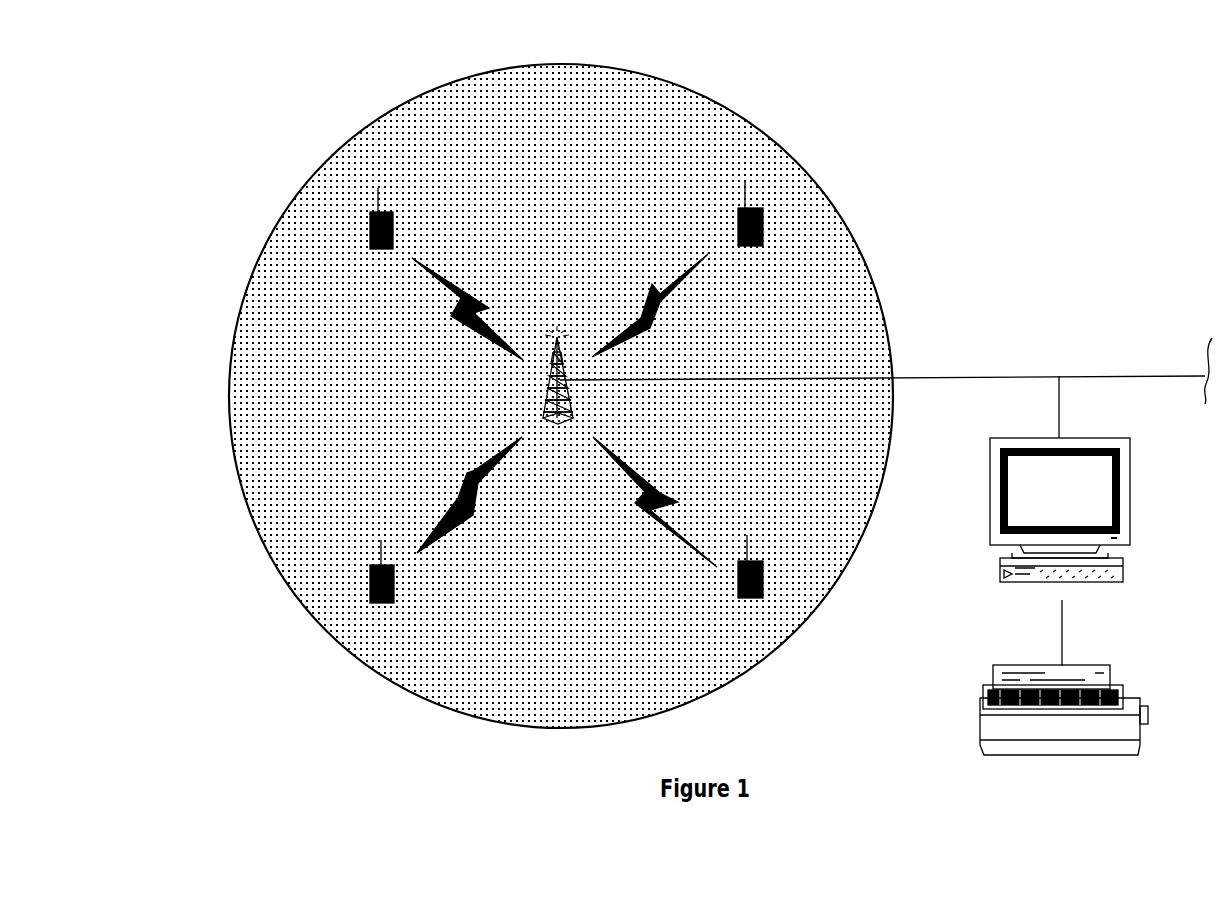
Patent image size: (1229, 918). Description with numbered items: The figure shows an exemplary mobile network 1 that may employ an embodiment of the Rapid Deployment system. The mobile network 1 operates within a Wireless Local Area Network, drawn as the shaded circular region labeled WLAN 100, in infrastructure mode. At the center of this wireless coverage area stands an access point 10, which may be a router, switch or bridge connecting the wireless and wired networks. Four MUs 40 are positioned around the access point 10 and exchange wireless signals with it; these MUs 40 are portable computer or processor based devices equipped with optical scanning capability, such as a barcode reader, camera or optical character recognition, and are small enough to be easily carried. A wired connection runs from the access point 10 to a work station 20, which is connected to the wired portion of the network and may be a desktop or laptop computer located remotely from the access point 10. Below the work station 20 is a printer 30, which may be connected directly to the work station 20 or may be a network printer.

The mobile network 1 is at (452, 18).
The WLAN 100 is at (505, 140).
The access point 10 is at (545, 386).
The MUs 40 is at (370, 232).
The work station 20 is at (1130, 508).
The printer 30 is at (976, 706).